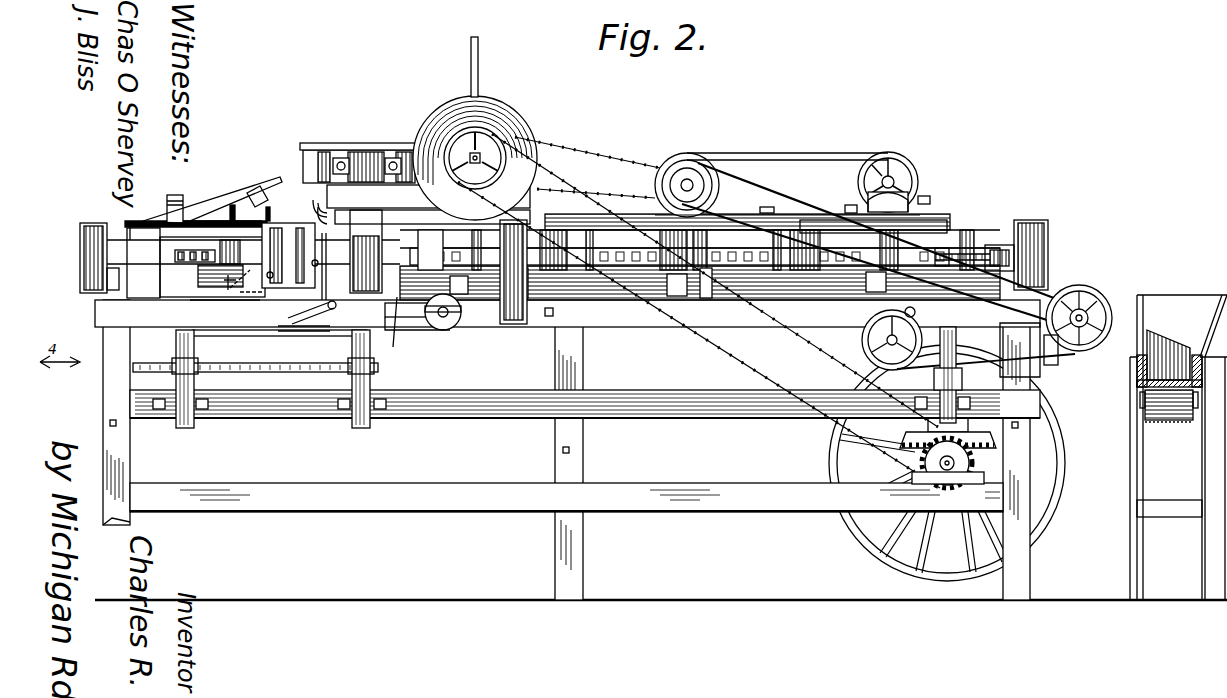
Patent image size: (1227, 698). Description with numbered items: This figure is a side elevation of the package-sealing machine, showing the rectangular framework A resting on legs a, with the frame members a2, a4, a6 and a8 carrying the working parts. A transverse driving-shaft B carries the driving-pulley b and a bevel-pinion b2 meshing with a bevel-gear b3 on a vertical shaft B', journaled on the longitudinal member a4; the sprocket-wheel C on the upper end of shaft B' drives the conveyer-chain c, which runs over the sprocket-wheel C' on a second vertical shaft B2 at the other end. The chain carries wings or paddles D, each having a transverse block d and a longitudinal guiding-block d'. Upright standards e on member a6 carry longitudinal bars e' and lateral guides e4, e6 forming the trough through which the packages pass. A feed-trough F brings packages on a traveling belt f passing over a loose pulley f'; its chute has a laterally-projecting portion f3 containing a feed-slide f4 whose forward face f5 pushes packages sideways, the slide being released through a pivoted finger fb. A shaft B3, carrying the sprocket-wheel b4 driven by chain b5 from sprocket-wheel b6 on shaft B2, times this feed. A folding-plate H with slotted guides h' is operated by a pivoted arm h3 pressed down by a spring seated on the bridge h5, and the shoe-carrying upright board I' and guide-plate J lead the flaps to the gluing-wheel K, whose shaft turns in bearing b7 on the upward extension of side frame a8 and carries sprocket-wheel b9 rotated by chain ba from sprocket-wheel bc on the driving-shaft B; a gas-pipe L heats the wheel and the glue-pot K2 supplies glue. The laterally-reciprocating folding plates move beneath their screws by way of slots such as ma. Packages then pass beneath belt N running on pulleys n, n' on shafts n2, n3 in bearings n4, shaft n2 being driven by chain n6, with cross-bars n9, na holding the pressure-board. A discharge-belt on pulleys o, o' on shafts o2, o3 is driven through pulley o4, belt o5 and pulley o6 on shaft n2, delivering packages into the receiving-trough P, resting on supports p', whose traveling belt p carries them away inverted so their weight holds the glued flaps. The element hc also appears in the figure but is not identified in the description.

The legs a is at (661, 450).
The frame member a2 is at (566, 497).
The longitudinal frame member a4 is at (702, 418).
The longitudinal frame member a6 is at (567, 338).
The side frame a8 is at (424, 204).
The framework A is at (562, 345).
The driving-pulley b is at (840, 462).
The bevel-pinion b2 is at (975, 468).
The bevel-gear b3 is at (985, 440).
The sprocket-wheel b4 is at (345, 375).
The chain b5 is at (272, 373).
The sprocket-wheel b6 is at (152, 360).
The bearing b7 is at (548, 172).
The sprocket-wheel b9 is at (522, 140).
The chain ba is at (730, 340).
The sprocket-wheel bc is at (955, 488).
The driving-shaft B is at (942, 514).
The vertical shaft B' is at (956, 379).
The vertical shaft B2 is at (193, 352).
The shaft B3 is at (420, 366).
The conveyer-chain c is at (762, 288).
The sprocket-wheel C is at (962, 243).
The sprocket-wheel C' is at (212, 281).
The transverse vertical block d is at (559, 256).
The longitudinal guiding-block d' is at (563, 269).
The wings or paddles D is at (561, 287).
The upright standards e is at (547, 257).
The longitudinal bar e' is at (543, 202).
The lateral guide e4 is at (191, 222).
The lateral guide e6 is at (198, 290).
The traveling belt f is at (417, 329).
The loose pulley f' is at (443, 330).
The laterally-projecting portion f3 is at (330, 262).
The feed-slide f4 is at (290, 248).
The forward face f5 is at (285, 223).
The pivoted finger fb is at (312, 320).
The feed-trough F is at (234, 282).
The pivoted arm h3 is at (221, 197).
The bridge h5 is at (175, 194).
The slotted guides h' is at (257, 183).
The clamp hc is at (712, 290).
The folding-plate H is at (277, 177).
The upright board I' is at (404, 202).
The guide-plate J is at (325, 148).
The gluing-wheel K is at (518, 124).
The glue-pot K2 is at (378, 150).
The gas-pipe L is at (481, 62).
The slot ma is at (575, 225).
The pulley n is at (687, 167).
The pulley n' is at (931, 185).
The shaft n2 is at (684, 182).
The shaft n3 is at (890, 165).
The bearings n4 is at (900, 190).
The chain n6 is at (588, 195).
The cross-bar n9 is at (763, 205).
The cross-bar na is at (850, 203).
The belt N is at (780, 152).
The pulley o is at (1078, 339).
The pulley o' is at (963, 340).
The shaft o2 is at (1080, 282).
The shaft o3 is at (893, 315).
The pulley o4 is at (1084, 348).
The belt o5 is at (740, 170).
The pulley o6 is at (695, 185).
The traveling belt p is at (1152, 410).
The supports p' is at (1179, 535).
The receiving-trough P is at (1178, 447).